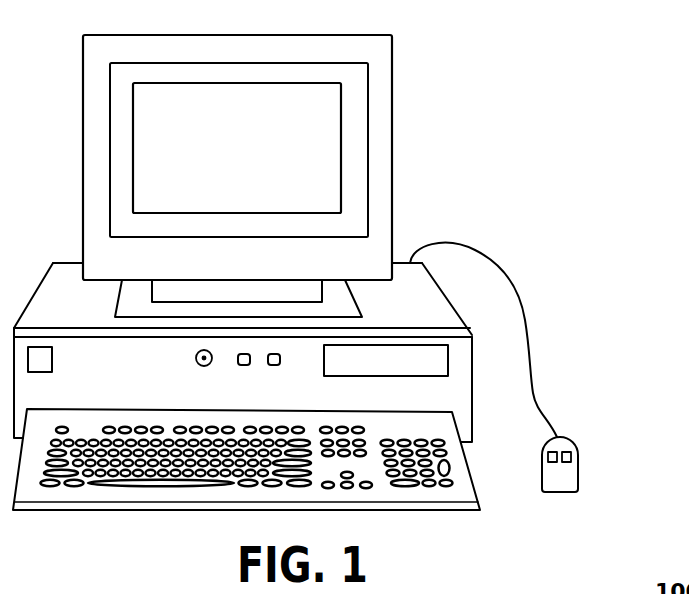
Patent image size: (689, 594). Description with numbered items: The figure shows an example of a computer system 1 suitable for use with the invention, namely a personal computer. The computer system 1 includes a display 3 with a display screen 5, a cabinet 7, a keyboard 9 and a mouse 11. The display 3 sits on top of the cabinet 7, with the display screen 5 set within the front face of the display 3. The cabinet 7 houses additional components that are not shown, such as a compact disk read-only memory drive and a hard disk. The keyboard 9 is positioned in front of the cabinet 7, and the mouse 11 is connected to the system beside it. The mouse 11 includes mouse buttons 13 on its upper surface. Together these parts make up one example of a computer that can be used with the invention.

The computer system 1 is at (530, 60).
The display 3 is at (392, 147).
The display screen 5 is at (319, 118).
The cabinet 7 is at (428, 307).
The keyboard 9 is at (193, 512).
The mouse 11 is at (585, 455).
The mouse buttons 13 is at (553, 450).